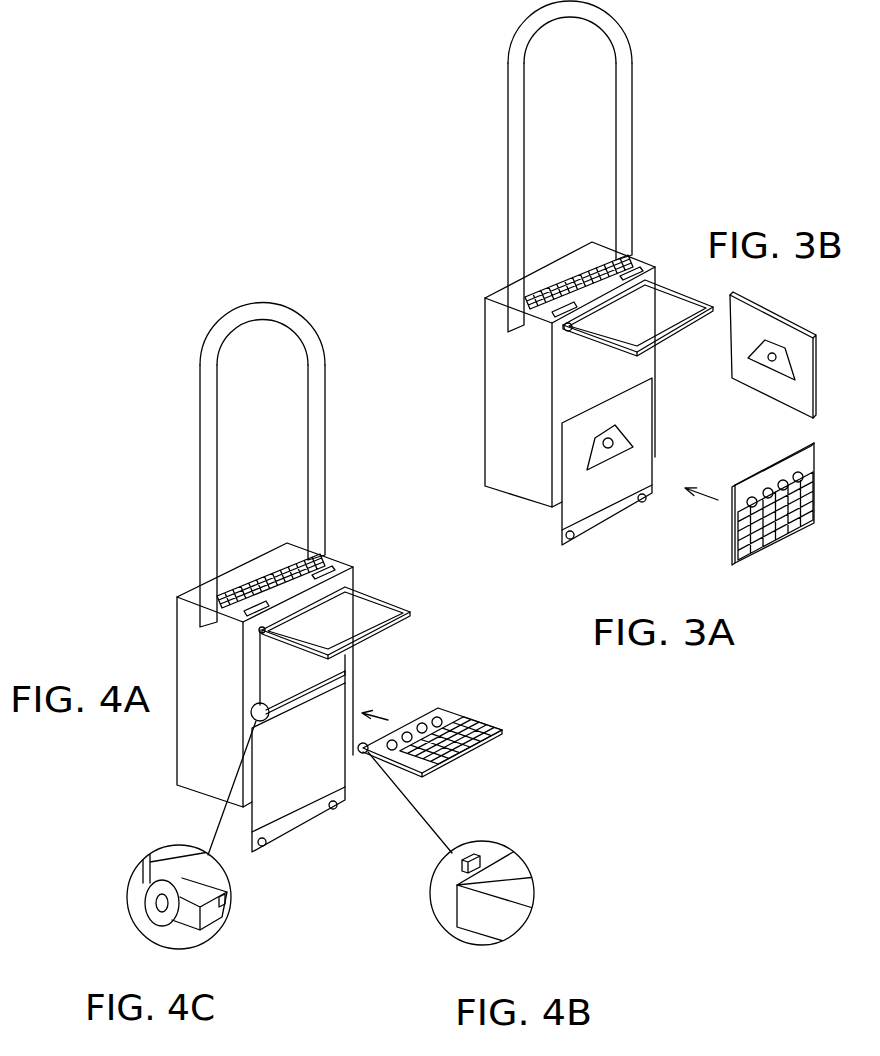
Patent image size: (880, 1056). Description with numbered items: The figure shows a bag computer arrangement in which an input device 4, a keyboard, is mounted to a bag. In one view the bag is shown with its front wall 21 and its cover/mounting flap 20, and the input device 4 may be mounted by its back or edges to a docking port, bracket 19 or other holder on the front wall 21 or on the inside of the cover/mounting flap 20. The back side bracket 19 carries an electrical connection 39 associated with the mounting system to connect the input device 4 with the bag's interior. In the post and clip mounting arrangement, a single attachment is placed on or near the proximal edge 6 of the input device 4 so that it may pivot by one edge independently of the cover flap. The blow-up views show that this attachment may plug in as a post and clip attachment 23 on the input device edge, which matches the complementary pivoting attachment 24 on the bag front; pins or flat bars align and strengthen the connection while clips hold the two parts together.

In FIG. 3B, the input device 4 is at (747, 510).
In FIG. 4A, the input device 4 is at (448, 717).
In FIG. 4A, the proximal edge 6 is at (413, 708).
In FIG. 3B, the bracket 19 is at (777, 367).
In FIG. 3A, the cover/mounting flap 20 is at (578, 495).
In FIG. 3A, the front wall 21 is at (582, 375).
In FIG. 4B, the post and clip attachment 23 is at (495, 852).
In FIG. 4C, the pivoting attachment 24 is at (226, 910).
In FIG. 3B, the electrical connection 39 is at (775, 351).